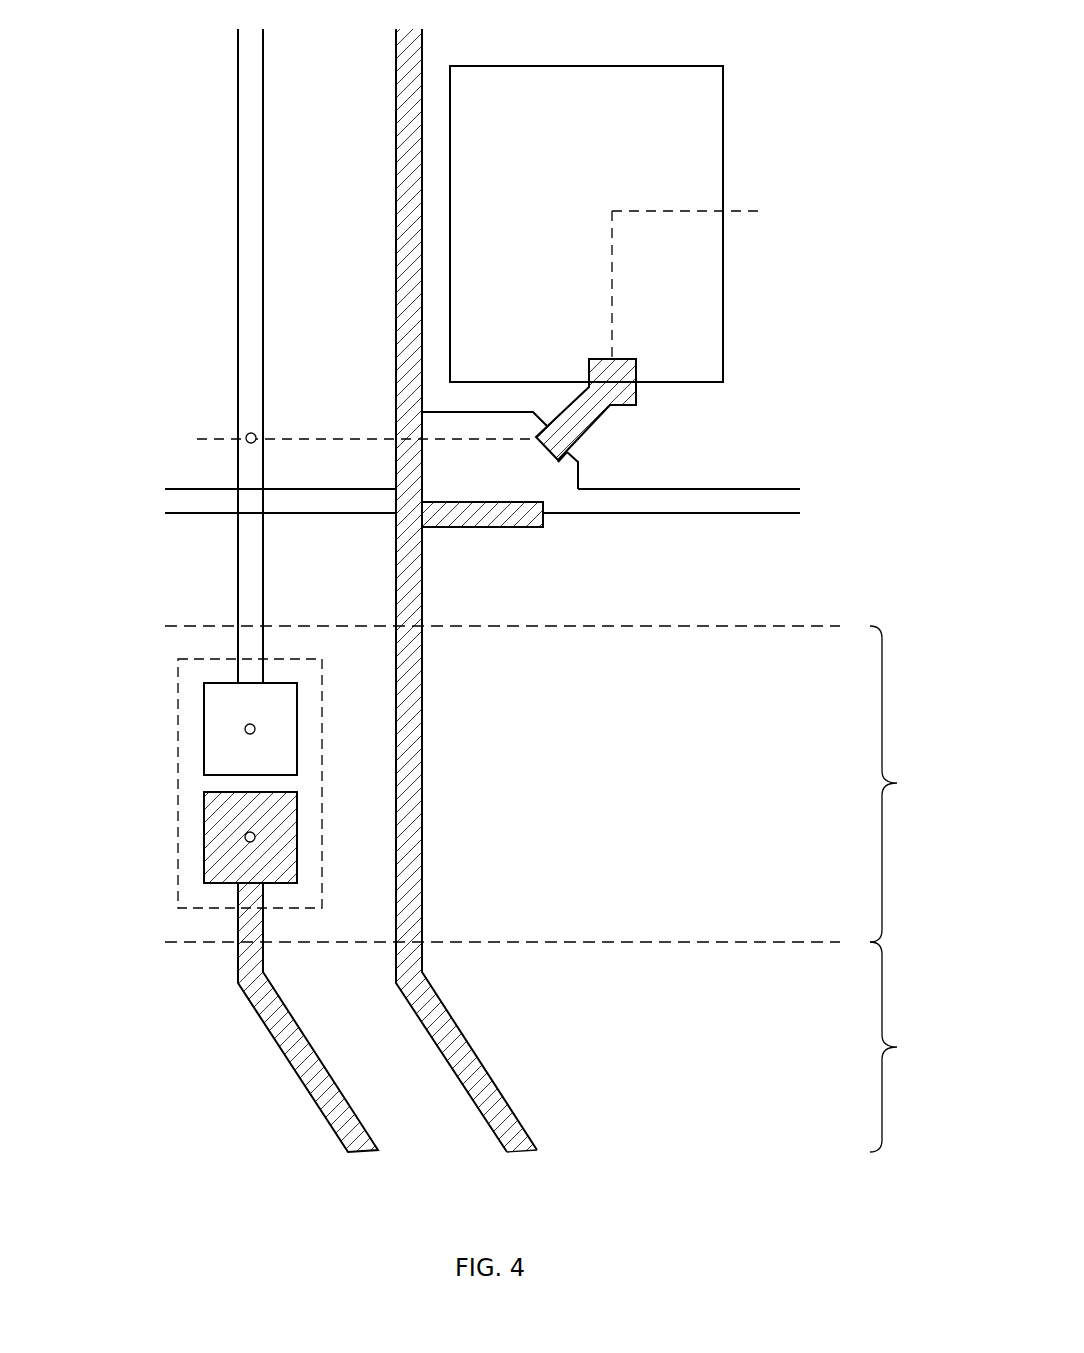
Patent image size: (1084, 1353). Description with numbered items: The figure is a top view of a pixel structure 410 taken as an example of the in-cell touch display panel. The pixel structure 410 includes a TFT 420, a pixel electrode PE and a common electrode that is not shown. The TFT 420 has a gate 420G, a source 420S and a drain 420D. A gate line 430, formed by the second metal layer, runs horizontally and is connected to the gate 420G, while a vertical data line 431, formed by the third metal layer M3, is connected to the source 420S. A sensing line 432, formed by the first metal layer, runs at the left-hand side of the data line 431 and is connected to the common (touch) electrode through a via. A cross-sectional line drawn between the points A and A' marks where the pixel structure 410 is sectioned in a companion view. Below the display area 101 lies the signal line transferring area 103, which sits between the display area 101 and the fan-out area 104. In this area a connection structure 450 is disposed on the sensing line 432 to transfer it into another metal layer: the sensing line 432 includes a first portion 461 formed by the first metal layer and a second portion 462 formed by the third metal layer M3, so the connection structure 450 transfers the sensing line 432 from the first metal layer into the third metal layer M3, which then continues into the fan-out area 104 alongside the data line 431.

The pixel structure 410 is at (200, 150).
The TFT 420 is at (442, 400).
The drain 420D is at (638, 402).
The source 420S is at (485, 526).
The gate 420G is at (558, 468).
The gate line 430 is at (707, 515).
The sensing line 432 is at (250, 578).
The data line 431 is at (413, 788).
The connection structure 450 is at (178, 783).
The first portion 461 is at (220, 730).
The second portion 462 is at (220, 840).
The display area 101 is at (845, 607).
The signal line transferring area 103 is at (556, 784).
The fan-out area 104 is at (909, 1047).
The pixel electrode PE is at (712, 362).
The third metal layer M3 is at (297, 1062).
The cross-sectional line endpoint A is at (350, 444).
The cross-sectional line endpoint A' is at (701, 278).